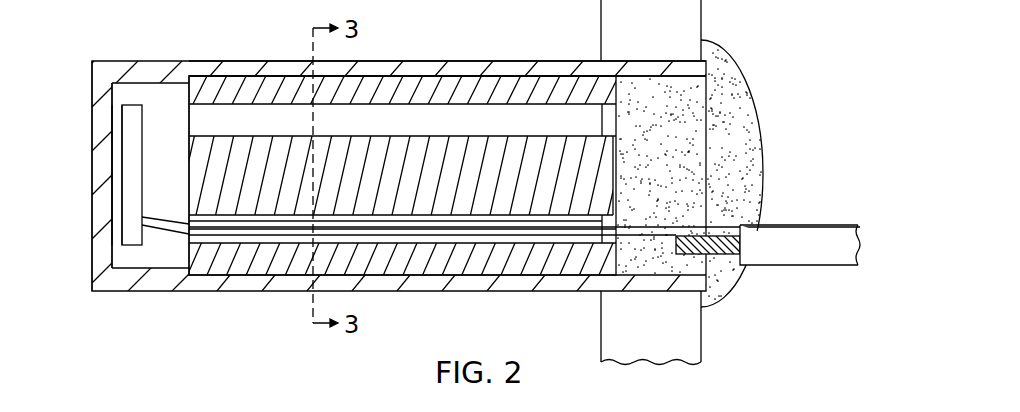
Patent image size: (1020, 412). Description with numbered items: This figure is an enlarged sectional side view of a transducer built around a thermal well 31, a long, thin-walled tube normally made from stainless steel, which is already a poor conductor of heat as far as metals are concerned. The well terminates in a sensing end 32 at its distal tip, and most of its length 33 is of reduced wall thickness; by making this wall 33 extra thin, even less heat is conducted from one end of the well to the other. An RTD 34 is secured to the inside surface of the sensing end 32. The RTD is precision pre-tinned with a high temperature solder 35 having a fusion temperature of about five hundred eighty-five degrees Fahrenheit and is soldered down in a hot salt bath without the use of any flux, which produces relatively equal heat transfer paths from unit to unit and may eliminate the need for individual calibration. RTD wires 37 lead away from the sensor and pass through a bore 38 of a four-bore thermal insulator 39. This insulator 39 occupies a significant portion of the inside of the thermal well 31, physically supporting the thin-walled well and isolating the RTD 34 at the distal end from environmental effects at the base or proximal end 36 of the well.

The thermal well 31 is at (268, 60).
The sensing end 32 is at (92, 139).
The length of reduced wall thickness 33 is at (508, 61).
The RTD 34 is at (139, 114).
The high temperature solder 35 is at (117, 114).
The base or proximal end 36 is at (731, 75).
The RTD wires 37 is at (248, 229).
The bore 38 is at (279, 244).
The four-bore thermal insulator 39 is at (440, 78).